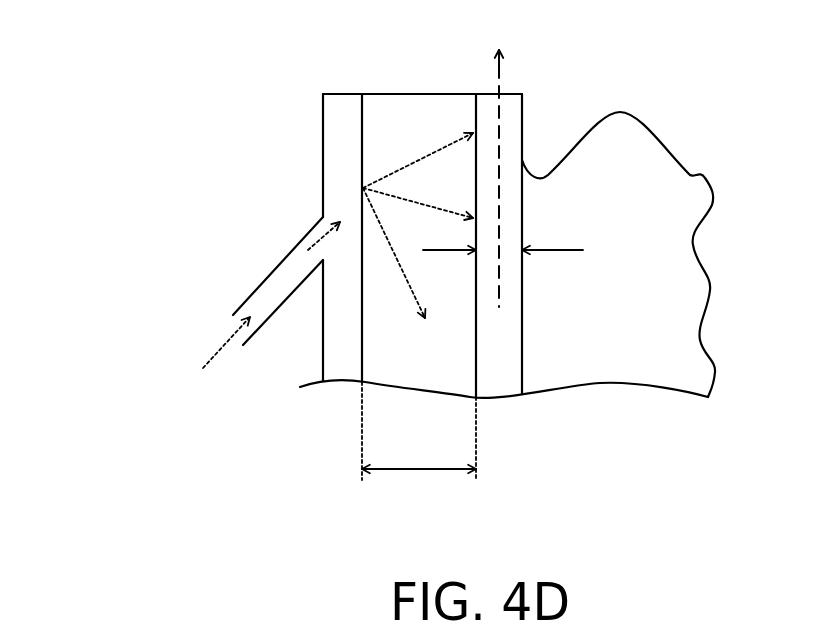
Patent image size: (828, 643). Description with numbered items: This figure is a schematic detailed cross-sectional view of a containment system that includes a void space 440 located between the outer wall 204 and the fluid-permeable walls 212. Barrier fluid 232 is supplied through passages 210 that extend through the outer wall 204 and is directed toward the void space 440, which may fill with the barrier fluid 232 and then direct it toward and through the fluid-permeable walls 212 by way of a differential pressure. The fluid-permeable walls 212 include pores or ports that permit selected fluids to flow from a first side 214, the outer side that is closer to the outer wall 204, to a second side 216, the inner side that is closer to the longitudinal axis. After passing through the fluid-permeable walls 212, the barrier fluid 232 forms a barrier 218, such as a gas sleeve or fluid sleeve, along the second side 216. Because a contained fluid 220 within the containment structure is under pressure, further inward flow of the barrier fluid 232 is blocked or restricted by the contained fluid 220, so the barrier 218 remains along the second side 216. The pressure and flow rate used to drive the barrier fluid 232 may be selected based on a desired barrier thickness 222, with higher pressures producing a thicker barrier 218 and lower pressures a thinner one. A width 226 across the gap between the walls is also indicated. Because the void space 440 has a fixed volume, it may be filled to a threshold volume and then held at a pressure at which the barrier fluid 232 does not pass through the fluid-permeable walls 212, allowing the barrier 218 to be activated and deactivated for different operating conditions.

The outer wall 204 is at (324, 195).
The passages 210 is at (260, 287).
The fluid-permeable walls 212 is at (415, 94).
The first side 214 is at (362, 107).
The second side 216 is at (477, 363).
The barrier 218 is at (522, 108).
The contained fluid 220 is at (629, 308).
The barrier thickness 222 is at (583, 250).
The gap width 226 is at (418, 467).
The barrier fluid 232 is at (163, 415).
The void space 440 is at (337, 152).